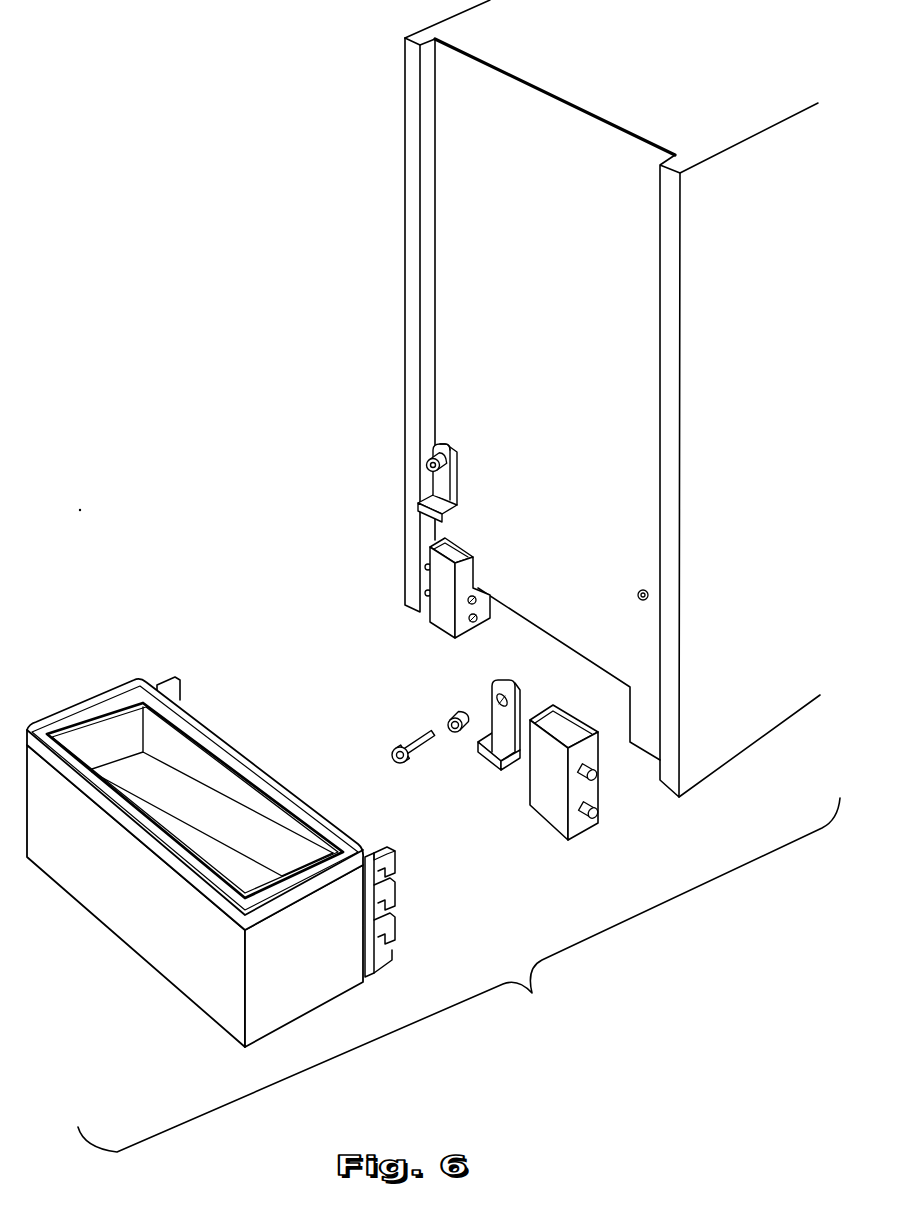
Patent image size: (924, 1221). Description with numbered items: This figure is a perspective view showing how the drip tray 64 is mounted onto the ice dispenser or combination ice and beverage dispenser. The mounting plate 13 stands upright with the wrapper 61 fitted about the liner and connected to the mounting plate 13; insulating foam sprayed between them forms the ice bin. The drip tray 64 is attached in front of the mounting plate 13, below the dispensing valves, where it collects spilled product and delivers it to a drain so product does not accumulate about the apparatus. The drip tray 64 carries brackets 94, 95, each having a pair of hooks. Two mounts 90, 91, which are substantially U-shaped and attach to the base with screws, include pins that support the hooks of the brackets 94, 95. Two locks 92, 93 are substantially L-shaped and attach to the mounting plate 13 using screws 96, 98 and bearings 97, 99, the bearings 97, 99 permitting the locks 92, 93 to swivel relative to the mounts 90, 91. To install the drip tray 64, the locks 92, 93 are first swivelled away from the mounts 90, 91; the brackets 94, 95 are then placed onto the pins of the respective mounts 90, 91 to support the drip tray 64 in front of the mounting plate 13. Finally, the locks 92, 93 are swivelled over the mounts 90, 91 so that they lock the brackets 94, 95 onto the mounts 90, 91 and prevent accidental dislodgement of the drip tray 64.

The mounting plate 13 is at (566, 356).
The wrapper 61 is at (754, 451).
The drip tray 64 is at (118, 903).
The mount 90 is at (545, 800).
The mount 91 is at (437, 625).
The lock 92 is at (480, 753).
The lock 93 is at (442, 487).
The bracket 94 is at (392, 862).
The bracket 95 is at (180, 687).
The screw 96 is at (393, 747).
The bearing 97 is at (452, 714).
The screw 98 is at (426, 463).
The bearing 99 is at (448, 445).